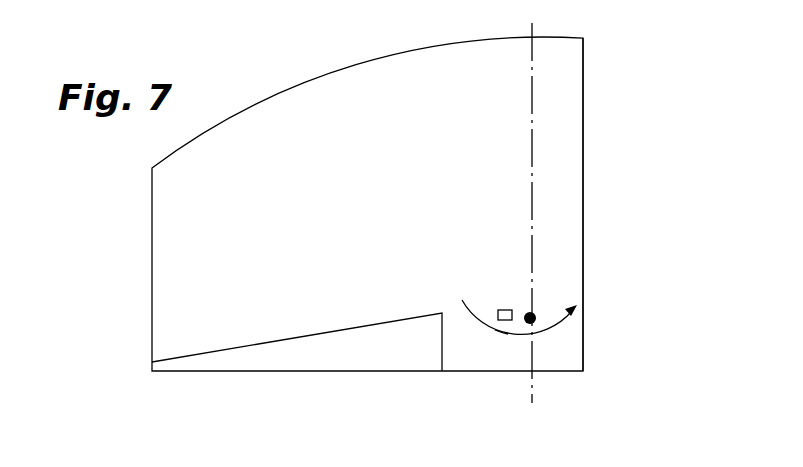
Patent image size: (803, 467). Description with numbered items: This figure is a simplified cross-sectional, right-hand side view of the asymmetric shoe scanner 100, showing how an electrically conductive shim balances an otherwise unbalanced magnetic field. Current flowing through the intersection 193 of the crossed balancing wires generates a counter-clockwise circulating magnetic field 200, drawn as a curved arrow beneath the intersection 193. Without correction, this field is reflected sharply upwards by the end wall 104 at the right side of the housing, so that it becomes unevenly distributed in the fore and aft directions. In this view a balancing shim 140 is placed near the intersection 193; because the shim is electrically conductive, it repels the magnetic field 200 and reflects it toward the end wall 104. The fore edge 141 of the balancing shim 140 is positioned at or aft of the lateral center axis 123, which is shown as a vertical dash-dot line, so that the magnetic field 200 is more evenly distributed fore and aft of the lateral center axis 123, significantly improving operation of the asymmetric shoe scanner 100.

The asymmetric shoe scanner 100 is at (267, 83).
The lateral center axis 123 is at (533, 83).
The end wall 104 is at (584, 165).
The balancing shim 140 is at (498, 310).
The intersection 193 is at (530, 301).
The magnetic field 200 is at (555, 328).
The fore edge 141 is at (501, 326).